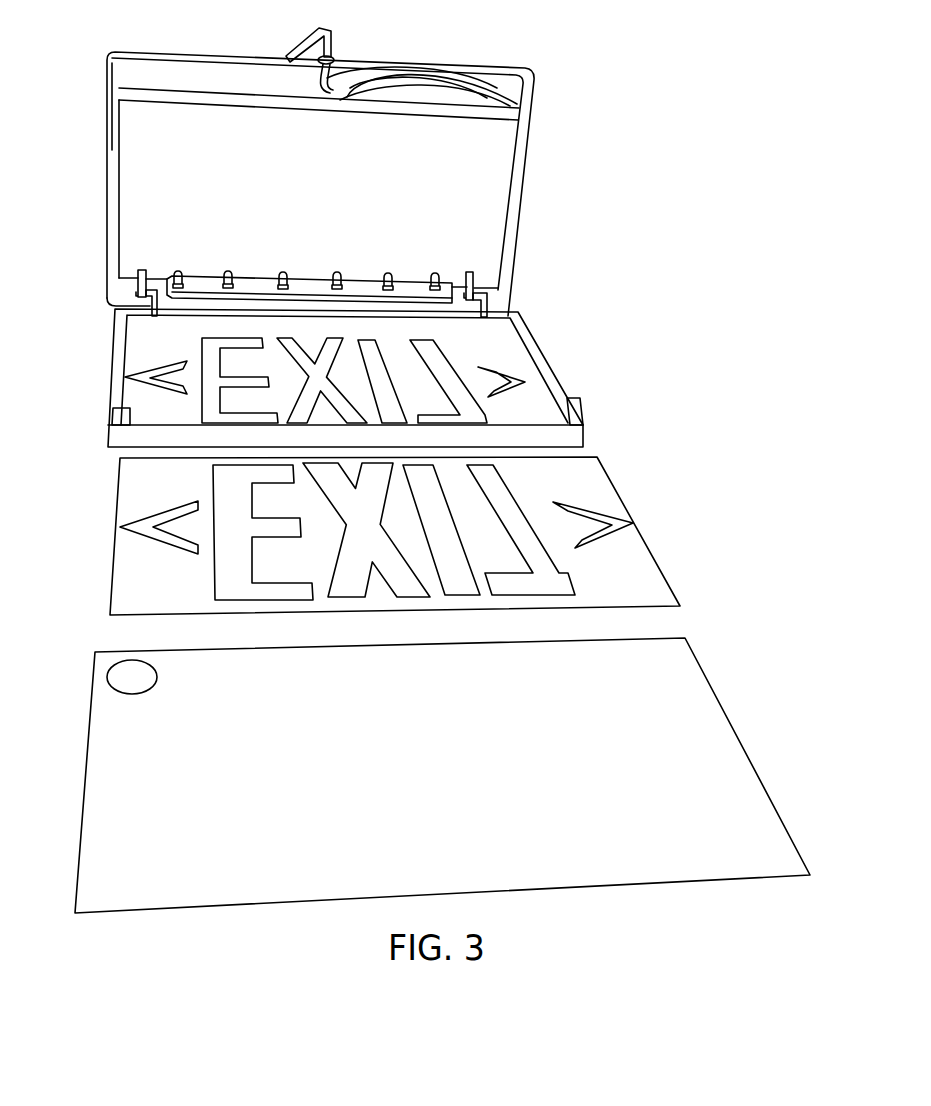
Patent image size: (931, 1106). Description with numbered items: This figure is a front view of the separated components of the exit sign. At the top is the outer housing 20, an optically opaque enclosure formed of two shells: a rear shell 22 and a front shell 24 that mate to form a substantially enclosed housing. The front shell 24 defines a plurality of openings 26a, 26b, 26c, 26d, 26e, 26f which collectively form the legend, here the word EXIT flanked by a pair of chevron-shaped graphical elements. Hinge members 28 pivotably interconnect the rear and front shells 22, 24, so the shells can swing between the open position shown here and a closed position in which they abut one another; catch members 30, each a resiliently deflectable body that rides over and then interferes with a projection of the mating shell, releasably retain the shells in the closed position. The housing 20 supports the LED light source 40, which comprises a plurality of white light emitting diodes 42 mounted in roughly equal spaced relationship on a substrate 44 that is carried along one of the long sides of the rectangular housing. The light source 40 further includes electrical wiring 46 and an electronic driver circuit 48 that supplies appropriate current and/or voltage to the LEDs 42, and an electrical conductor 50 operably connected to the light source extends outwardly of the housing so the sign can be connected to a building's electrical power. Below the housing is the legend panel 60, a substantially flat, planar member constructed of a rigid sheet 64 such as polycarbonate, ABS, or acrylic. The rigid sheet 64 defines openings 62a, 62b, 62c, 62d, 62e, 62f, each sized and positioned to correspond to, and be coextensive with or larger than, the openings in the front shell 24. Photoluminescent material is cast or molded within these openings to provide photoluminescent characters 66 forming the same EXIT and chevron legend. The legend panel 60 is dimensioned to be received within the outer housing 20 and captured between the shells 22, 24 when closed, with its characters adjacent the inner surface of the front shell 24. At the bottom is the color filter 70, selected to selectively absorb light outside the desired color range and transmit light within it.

The outer housing 20 is at (340, 229).
The rear shell 22 is at (330, 164).
The front shell 24 is at (346, 378).
The opening 26a is at (142, 370).
The opening 26b is at (220, 373).
The opening 26c is at (320, 382).
The opening 26d is at (383, 373).
The opening 26e is at (427, 357).
The opening 26f is at (523, 380).
The hinge member 28 is at (141, 270).
The catch member 30 is at (120, 413).
The LED light source 40 is at (303, 200).
The white light emitting diode 42 is at (178, 271).
The substrate 44 is at (262, 287).
The electrical wiring 46 is at (300, 72).
The electronic driver circuit 48 is at (397, 93).
The electrical conductor 50 is at (312, 36).
The legend panel 60 is at (386, 530).
The opening 62a is at (137, 517).
The opening 62b is at (213, 488).
The opening 62c is at (328, 498).
The opening 62d is at (462, 543).
The opening 62e is at (510, 488).
The opening 62f is at (625, 531).
The rigid sheet 64 is at (607, 502).
The photoluminescent character 66 is at (157, 537).
The color filter 70 is at (137, 673).